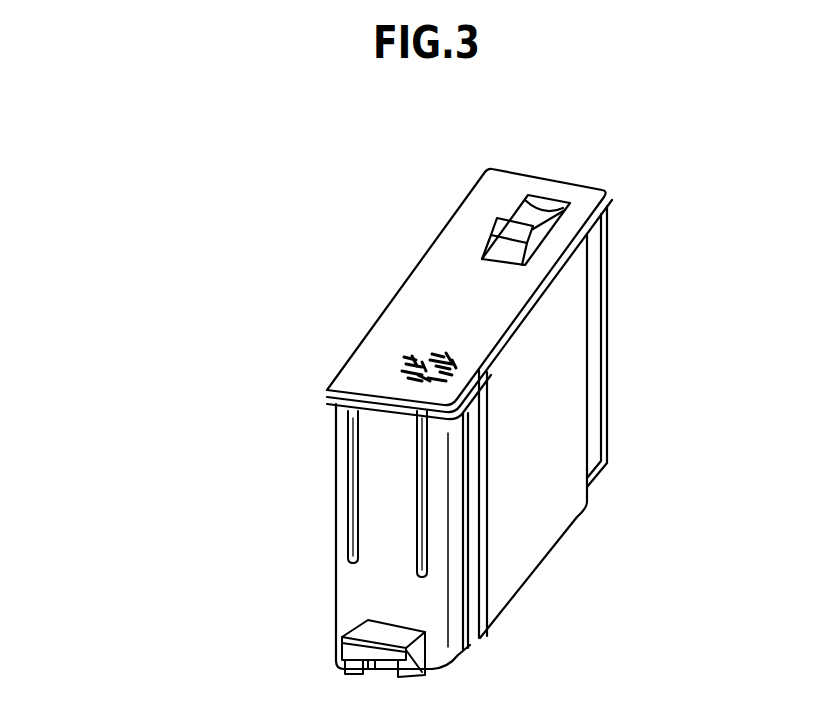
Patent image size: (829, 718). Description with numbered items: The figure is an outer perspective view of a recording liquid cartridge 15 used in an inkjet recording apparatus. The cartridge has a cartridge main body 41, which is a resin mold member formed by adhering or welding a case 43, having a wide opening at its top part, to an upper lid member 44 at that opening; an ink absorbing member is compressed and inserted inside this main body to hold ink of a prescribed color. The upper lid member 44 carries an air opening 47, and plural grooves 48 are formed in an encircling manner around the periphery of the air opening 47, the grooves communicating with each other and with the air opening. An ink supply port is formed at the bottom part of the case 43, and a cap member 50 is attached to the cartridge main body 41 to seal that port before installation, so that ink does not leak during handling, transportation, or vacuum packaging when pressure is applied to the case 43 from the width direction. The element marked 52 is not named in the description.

The recording liquid cartridge 15 is at (290, 424).
The cartridge main body 41 is at (362, 580).
The case 43 is at (387, 506).
The upper lid member 44 is at (447, 282).
The air opening 47 is at (415, 353).
The grooves 48 is at (420, 355).
The cap member 50 is at (560, 427).
The rib plate 52 is at (567, 312).